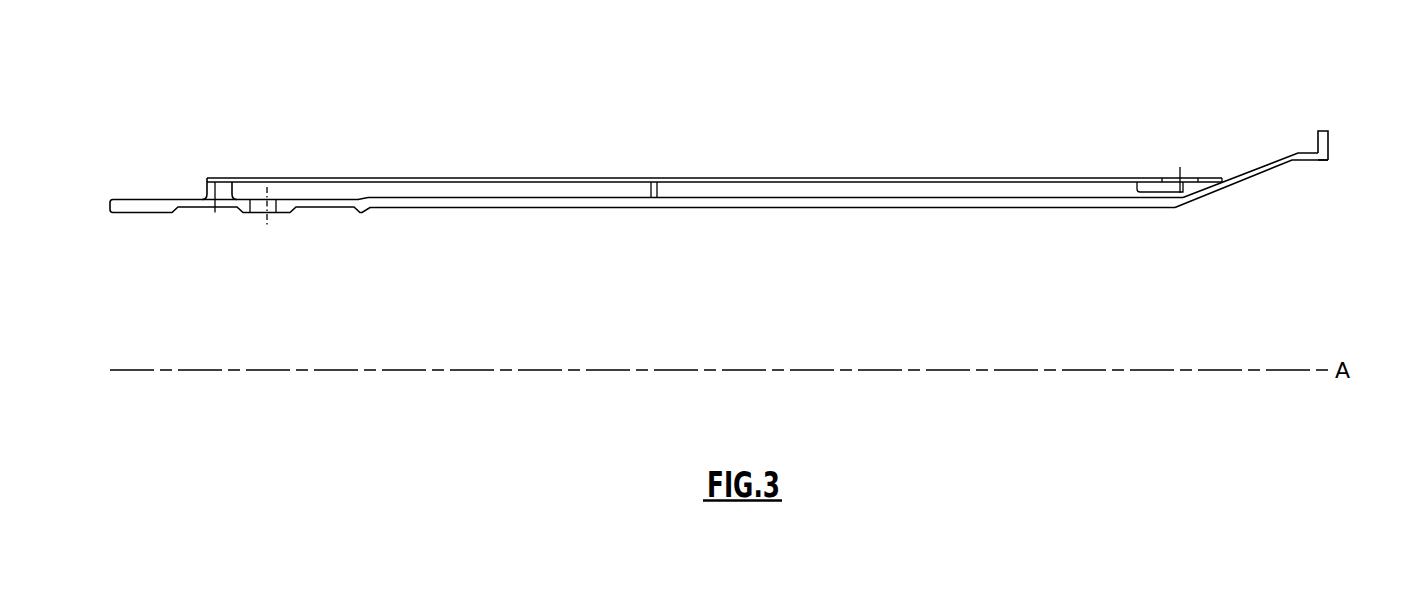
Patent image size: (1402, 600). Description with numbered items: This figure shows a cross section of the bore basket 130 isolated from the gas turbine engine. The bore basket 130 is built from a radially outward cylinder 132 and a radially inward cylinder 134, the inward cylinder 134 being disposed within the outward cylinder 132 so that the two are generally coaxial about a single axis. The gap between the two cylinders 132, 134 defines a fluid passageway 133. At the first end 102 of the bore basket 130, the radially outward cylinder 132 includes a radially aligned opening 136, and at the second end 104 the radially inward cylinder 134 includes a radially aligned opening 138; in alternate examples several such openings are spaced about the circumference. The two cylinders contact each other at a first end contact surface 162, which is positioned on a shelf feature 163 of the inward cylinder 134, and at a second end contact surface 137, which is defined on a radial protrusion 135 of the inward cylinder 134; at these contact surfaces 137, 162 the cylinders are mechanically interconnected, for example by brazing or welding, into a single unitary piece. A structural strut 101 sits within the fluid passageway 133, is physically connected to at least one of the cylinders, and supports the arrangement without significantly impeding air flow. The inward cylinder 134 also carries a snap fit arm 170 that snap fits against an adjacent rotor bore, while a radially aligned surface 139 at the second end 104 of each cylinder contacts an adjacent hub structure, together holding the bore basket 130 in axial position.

The bore basket 130 is at (975, 73).
The structural strut 101 is at (660, 190).
The first end 102 is at (1300, 113).
The second end 104 is at (280, 113).
The radially outward cylinder 132 is at (368, 178).
The fluid passageway 133 is at (865, 188).
The radially inward cylinder 134 is at (521, 199).
The radial protrusion 135 is at (200, 196).
The radially aligned opening 136 is at (1188, 178).
The second end contact surface 137 is at (215, 212).
The radially aligned opening 138 is at (276, 212).
The radially aligned surface 139 is at (1313, 132).
The first end contact surface 162 is at (1218, 189).
The shelf feature 163 is at (1195, 190).
The snap fit arm 170 is at (1323, 161).